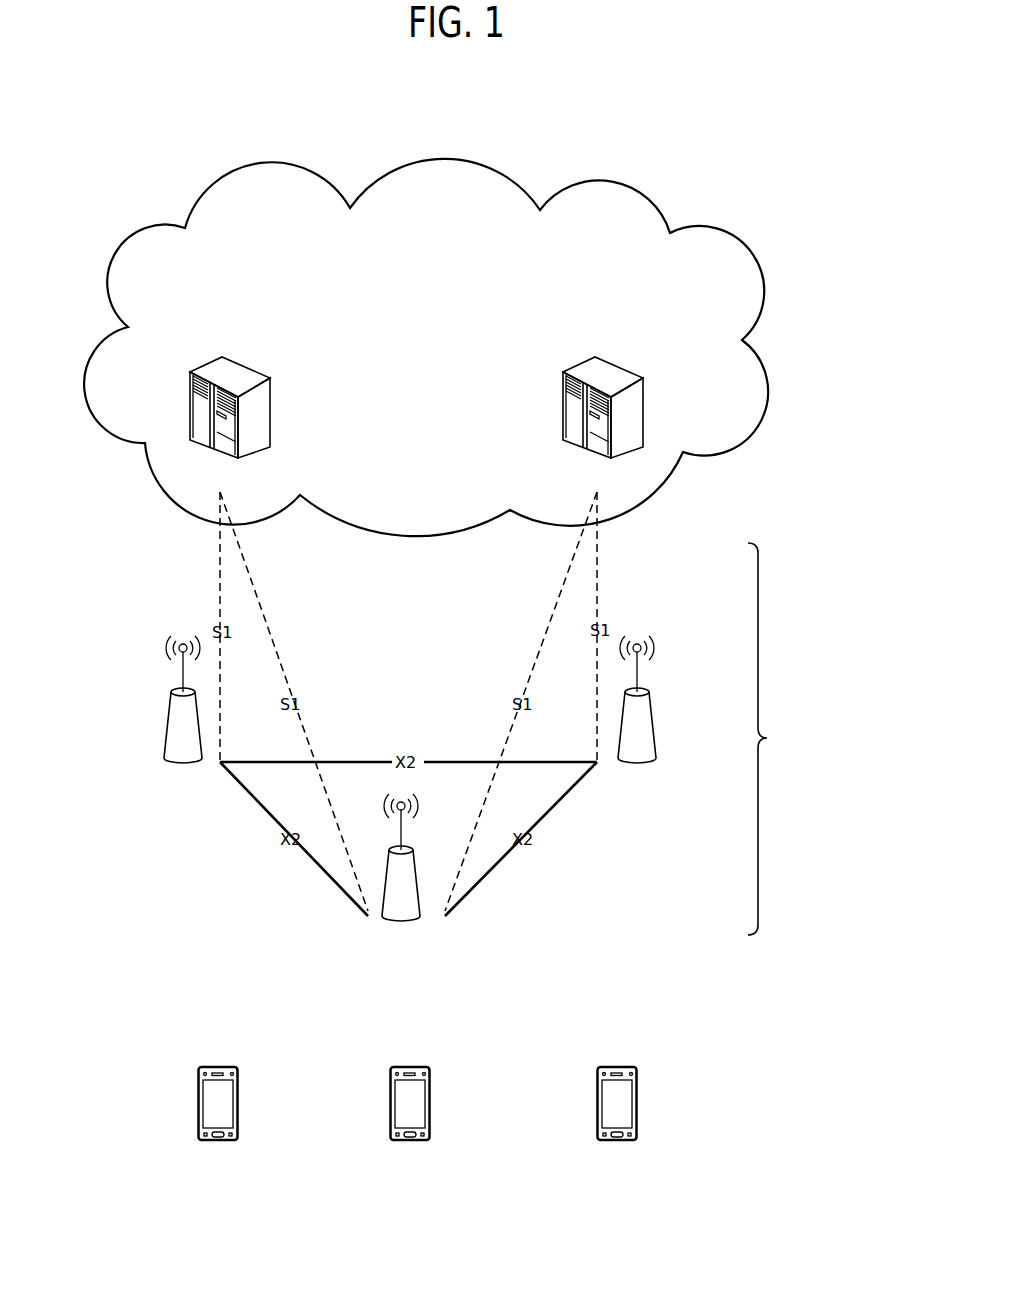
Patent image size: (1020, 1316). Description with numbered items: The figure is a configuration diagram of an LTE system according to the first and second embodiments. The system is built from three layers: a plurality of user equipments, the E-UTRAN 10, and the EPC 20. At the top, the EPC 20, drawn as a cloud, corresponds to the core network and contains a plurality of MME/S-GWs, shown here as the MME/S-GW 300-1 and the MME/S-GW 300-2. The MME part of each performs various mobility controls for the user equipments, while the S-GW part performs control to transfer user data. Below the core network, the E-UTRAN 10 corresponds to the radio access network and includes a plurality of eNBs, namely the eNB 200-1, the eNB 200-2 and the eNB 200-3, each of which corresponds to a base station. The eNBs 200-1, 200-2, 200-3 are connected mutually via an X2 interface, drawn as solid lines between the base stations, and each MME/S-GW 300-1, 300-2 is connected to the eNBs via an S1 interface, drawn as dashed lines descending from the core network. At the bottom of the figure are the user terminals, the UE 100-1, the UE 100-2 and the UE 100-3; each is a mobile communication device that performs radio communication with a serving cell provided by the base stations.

The E-UTRAN 10 is at (803, 739).
The EPC 20 is at (648, 195).
The UE 100-1 is at (230, 1067).
The UE 100-2 is at (421, 1067).
The UE 100-3 is at (628, 1067).
The eNB 200-1 is at (167, 727).
The eNB 200-2 is at (418, 893).
The eNB 200-3 is at (652, 707).
The MME/S-GW 300-1 is at (255, 370).
The MME/S-GW 300-2 is at (622, 367).